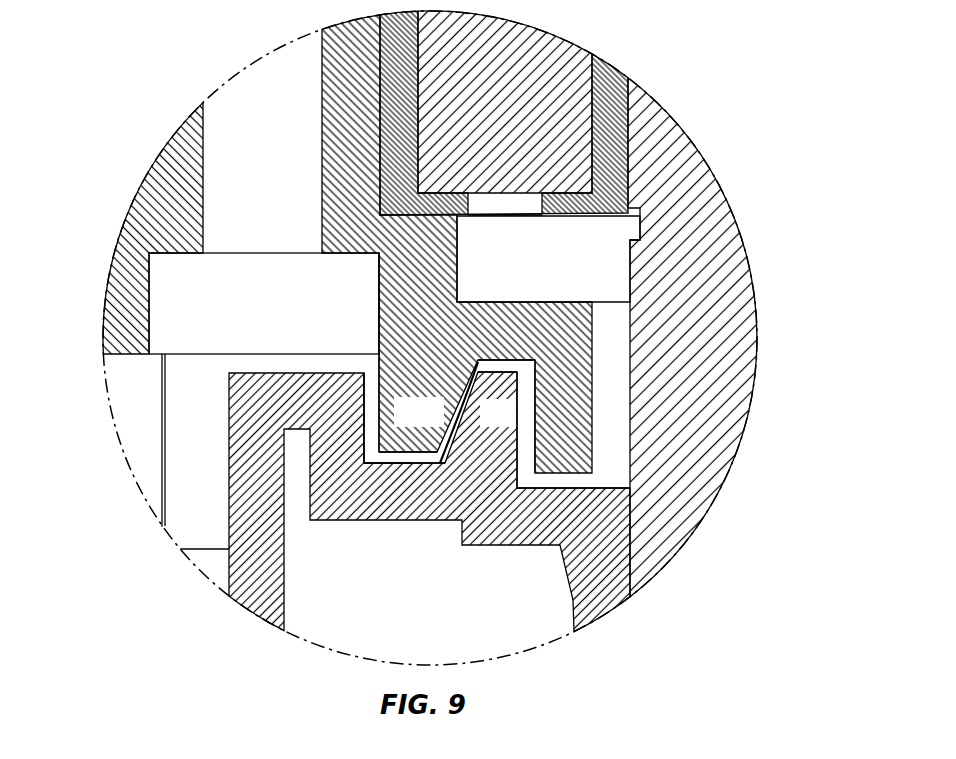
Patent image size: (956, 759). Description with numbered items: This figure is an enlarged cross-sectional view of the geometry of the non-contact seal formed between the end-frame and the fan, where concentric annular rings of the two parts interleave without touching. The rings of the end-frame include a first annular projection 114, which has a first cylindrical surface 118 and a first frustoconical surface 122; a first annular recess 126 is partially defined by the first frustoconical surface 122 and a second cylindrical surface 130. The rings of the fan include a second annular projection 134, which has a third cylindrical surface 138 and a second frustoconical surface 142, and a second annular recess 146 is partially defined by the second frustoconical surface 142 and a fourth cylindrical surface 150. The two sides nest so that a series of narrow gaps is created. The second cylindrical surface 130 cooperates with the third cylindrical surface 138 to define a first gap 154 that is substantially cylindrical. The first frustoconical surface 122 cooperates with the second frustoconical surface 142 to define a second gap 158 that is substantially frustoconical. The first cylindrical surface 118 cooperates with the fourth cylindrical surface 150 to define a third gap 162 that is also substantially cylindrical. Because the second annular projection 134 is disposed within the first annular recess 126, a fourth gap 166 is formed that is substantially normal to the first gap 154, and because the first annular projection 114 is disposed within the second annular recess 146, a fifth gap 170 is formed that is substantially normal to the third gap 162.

The first annular projection 114 is at (457, 244).
The first cylindrical surface 118 is at (380, 390).
The first frustoconical surface 122 is at (486, 362).
The first annular recess 126 is at (514, 360).
The second cylindrical surface 130 is at (537, 410).
The second annular projection 134 is at (429, 502).
The third cylindrical surface 138 is at (519, 452).
The second frustoconical surface 142 is at (413, 459).
The second annular recess 146 is at (402, 463).
The fourth cylindrical surface 150 is at (371, 445).
The first gap 154 is at (523, 425).
The second gap 158 is at (466, 383).
The third gap 162 is at (372, 404).
The fourth gap 166 is at (518, 363).
The fifth gap 170 is at (417, 457).